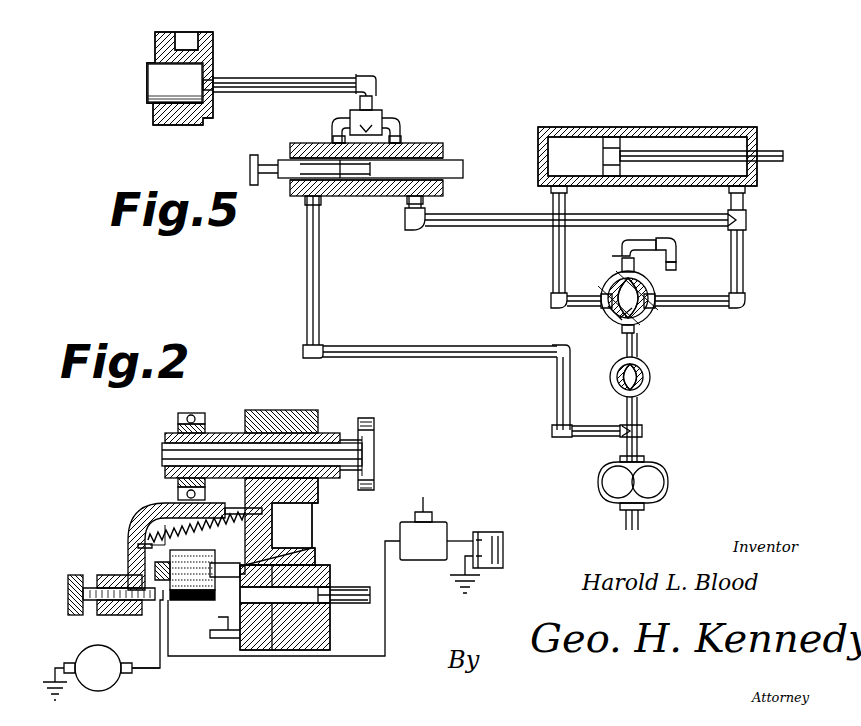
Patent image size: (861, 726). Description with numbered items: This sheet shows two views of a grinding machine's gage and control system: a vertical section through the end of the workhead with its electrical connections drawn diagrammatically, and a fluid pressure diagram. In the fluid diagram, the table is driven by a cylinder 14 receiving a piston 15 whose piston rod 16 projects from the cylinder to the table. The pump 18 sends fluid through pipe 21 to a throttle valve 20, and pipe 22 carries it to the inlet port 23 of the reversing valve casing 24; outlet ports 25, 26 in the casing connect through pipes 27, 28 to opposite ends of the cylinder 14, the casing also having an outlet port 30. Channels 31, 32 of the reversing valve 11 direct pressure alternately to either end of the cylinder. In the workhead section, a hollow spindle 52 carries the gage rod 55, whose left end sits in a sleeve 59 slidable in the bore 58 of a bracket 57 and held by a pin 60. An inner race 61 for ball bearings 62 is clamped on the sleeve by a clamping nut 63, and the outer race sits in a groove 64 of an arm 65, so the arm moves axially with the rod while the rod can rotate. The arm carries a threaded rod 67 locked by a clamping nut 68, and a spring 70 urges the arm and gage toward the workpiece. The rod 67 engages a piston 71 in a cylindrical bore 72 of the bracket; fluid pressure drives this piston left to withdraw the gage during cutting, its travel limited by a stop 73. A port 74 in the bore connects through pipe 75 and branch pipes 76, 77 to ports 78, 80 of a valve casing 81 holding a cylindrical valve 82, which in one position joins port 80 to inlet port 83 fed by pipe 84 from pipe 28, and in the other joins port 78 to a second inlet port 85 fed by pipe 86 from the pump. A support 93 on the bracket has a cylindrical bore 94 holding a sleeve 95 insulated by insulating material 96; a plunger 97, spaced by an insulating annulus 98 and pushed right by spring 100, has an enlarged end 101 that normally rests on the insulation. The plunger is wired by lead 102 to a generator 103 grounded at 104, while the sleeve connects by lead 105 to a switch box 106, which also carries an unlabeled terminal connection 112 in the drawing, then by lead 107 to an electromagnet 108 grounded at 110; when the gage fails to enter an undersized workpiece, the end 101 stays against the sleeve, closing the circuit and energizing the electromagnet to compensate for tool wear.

In FIG. 5, the reversing valve 11 is at (645, 312).
In FIG. 5, the cylinder 14 is at (655, 127).
In FIG. 5, the piston 15 is at (612, 137).
In FIG. 5, the piston rod 16 is at (770, 152).
In FIG. 5, the pump 18 is at (655, 470).
In FIG. 5, the throttle valve 20 is at (650, 375).
In FIG. 5, the pipe 21 is at (638, 412).
In FIG. 5, the pipe 22 is at (640, 348).
In FIG. 5, the inlet port 23 is at (626, 333).
In FIG. 5, the reversing valve casing 24 is at (622, 322).
In FIG. 5, the outlet port 25 is at (604, 296).
In FIG. 5, the outlet port 26 is at (660, 302).
In FIG. 5, the pipe 27 is at (553, 250).
In FIG. 5, the pipe 28 is at (743, 260).
In FIG. 5, the outlet port 30 is at (622, 266).
In FIG. 5, the channel 31 is at (612, 313).
In FIG. 5, the channel 32 is at (640, 280).
In FIG. 2, the hollow spindle 52 is at (368, 420).
In FIG. 2, the gage rod 55 is at (338, 440).
In FIG. 5, the bracket 57 is at (180, 118).
In FIG. 2, the bracket 57 is at (318, 503).
In FIG. 2, the bore 58 is at (295, 410).
In FIG. 2, the sleeve 59 is at (222, 432).
In FIG. 2, the pin 60 is at (175, 452).
In FIG. 2, the inner race 61 is at (180, 426).
In FIG. 2, the ball bearings 62 is at (189, 413).
In FIG. 2, the clamping nut 63 is at (178, 482).
In FIG. 2, the groove 64 is at (178, 494).
In FIG. 2, the arm 65 is at (128, 516).
In FIG. 2, the threaded rod 67 is at (80, 615).
In FIG. 2, the clamping nut 68 is at (110, 615).
In FIG. 2, the spring 70 is at (230, 508).
In FIG. 5, the piston 71 is at (158, 84).
In FIG. 2, the piston 71 is at (300, 560).
In FIG. 5, the cylindrical bore 72 is at (160, 62).
In FIG. 2, the cylindrical bore 72 is at (265, 645).
In FIG. 2, the stop 73 is at (218, 628).
In FIG. 5, the port 74 is at (220, 80).
In FIG. 2, the port 74 is at (352, 600).
In FIG. 5, the pipe 75 is at (318, 78).
In FIG. 2, the pipe 75 is at (345, 590).
In FIG. 5, the branch pipe 76 is at (336, 128).
In FIG. 5, the branch pipe 77 is at (398, 128).
In FIG. 5, the port 78 is at (333, 140).
In FIG. 5, the port 80 is at (400, 140).
In FIG. 5, the valve casing 81 is at (443, 150).
In FIG. 5, the cylindrical valve 82 is at (450, 170).
In FIG. 5, the inlet port 83 is at (405, 208).
In FIG. 5, the pipe 84 is at (490, 208).
In FIG. 5, the second inlet port 85 is at (307, 205).
In FIG. 5, the pipe 86 is at (307, 262).
In FIG. 2, the support 93 is at (190, 522).
In FIG. 2, the cylindrical bore 94 is at (196, 527).
In FIG. 2, the sleeve 95 is at (138, 546).
In FIG. 2, the insulating material 96 is at (215, 572).
In FIG. 2, the plunger 97 is at (155, 565).
In FIG. 2, the annulus 98 is at (160, 625).
In FIG. 2, the spring 100 is at (240, 570).
In FIG. 2, the enlarged end 101 is at (245, 568).
In FIG. 2, the lead 102 is at (150, 670).
In FIG. 2, the generator 103 is at (112, 678).
In FIG. 2, the ground 104 is at (62, 692).
In FIG. 2, the lead 105 is at (200, 656).
In FIG. 2, the switch box 106 is at (440, 528).
In FIG. 2, the lead 107 is at (463, 537).
In FIG. 2, the electromagnet 108 is at (490, 532).
In FIG. 2, the ground 110 is at (472, 582).
In FIG. 2, the terminal 112 is at (423, 500).